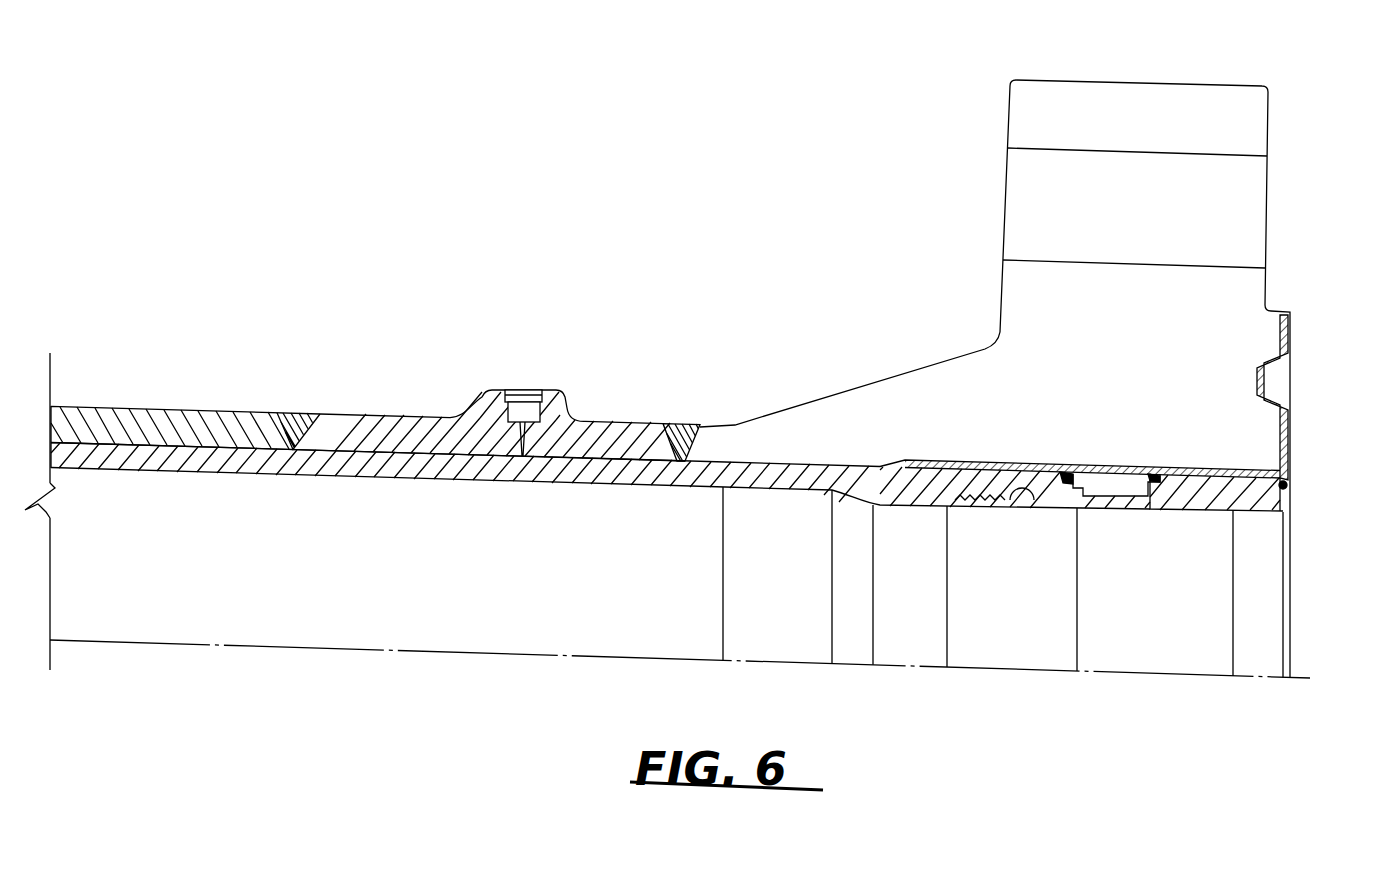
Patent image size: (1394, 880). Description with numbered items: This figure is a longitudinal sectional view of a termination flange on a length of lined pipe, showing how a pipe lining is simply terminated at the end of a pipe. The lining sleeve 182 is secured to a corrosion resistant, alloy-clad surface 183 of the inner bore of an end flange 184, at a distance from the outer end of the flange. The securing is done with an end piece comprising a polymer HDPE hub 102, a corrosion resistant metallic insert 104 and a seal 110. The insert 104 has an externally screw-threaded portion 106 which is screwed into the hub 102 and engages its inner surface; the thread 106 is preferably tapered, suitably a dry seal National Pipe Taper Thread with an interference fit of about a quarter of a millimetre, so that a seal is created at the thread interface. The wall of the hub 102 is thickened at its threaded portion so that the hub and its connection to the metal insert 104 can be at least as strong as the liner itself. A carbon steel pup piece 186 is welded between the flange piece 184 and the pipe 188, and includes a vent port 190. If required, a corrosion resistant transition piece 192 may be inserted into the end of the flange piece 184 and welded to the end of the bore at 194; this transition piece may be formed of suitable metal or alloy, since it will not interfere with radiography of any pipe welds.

The HDPE hub 102 is at (790, 500).
The corrosion resistant metallic insert 104 is at (978, 507).
The externally screw-threaded portion 106 is at (1032, 500).
The seal 110 is at (1103, 472).
The sleeve 182 is at (423, 470).
The alloy-clad surface 183 is at (1227, 468).
The end flange 184 is at (1163, 95).
The carbon steel pup piece 186 is at (360, 418).
The pipe 188 is at (162, 413).
The vent port 190 is at (568, 400).
The corrosion resistant transition piece 192 is at (1250, 505).
The weld 194 is at (1290, 483).